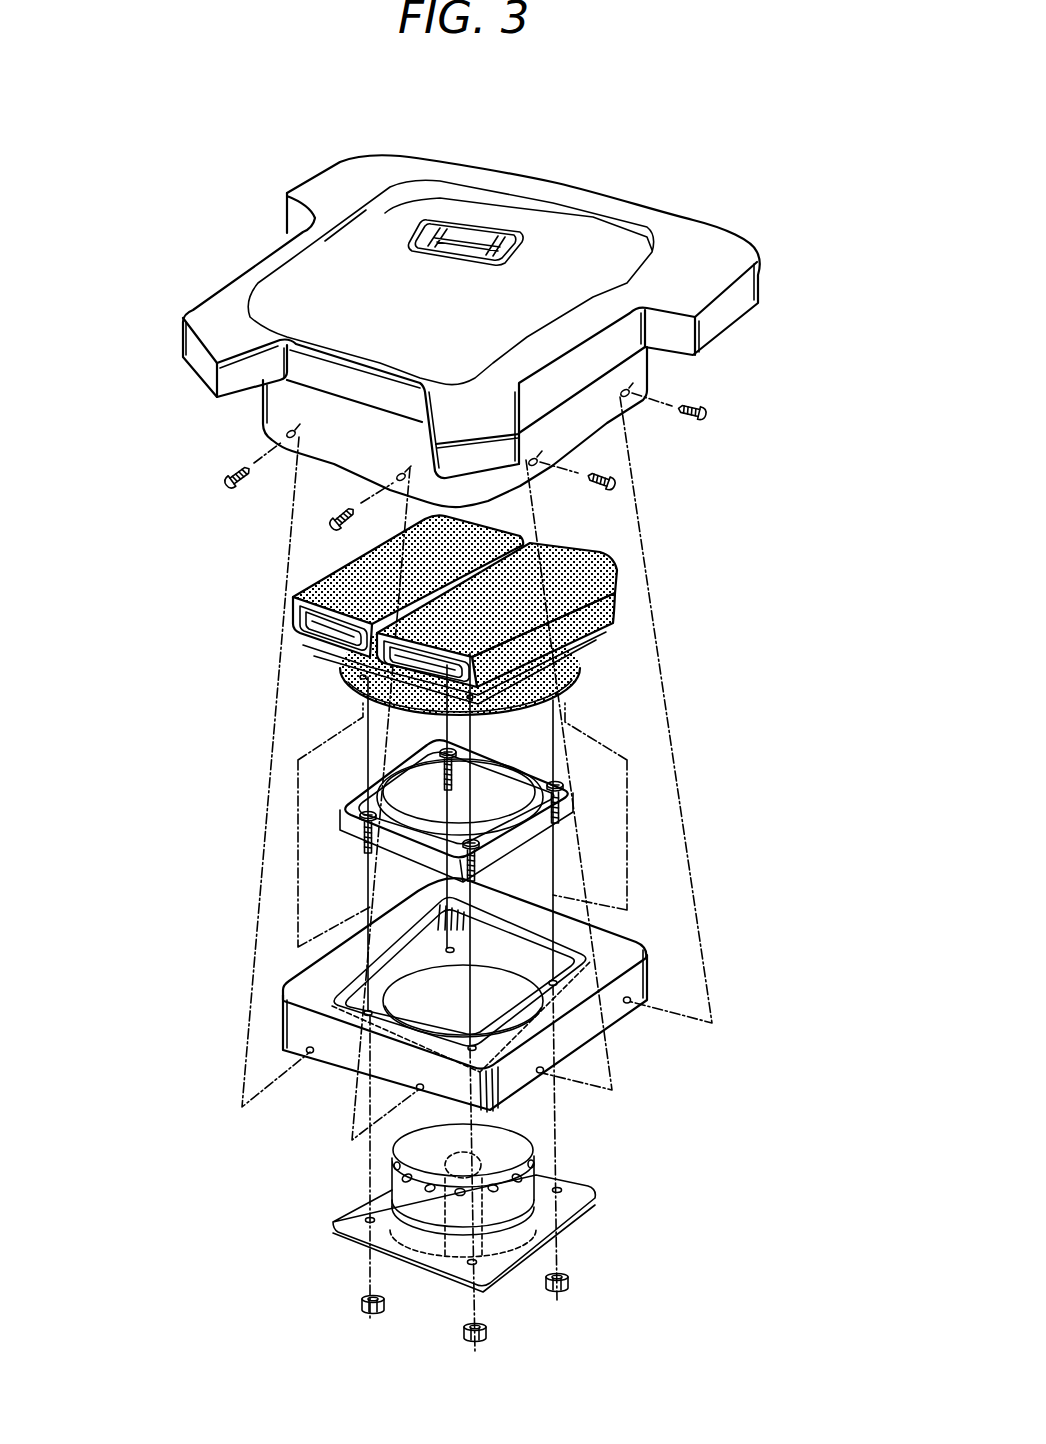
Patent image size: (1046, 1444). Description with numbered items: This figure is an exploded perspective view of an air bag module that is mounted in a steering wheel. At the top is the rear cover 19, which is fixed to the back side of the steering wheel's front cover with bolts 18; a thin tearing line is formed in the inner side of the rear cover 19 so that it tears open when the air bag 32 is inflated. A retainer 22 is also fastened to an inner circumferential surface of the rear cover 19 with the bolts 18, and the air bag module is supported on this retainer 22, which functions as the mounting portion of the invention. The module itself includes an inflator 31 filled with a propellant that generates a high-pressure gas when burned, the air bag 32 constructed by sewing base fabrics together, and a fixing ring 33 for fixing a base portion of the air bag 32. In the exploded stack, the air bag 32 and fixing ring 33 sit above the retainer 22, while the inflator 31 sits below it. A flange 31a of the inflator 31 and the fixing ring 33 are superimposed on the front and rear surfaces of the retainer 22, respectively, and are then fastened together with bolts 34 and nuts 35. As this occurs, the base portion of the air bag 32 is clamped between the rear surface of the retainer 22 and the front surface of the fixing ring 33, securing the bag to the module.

The rear cover 19 is at (680, 213).
The bolts 18 is at (226, 481).
The air bag 32 is at (606, 581).
The fixing ring 33 is at (403, 853).
The bolts 34 is at (364, 812).
The retainer 22 is at (343, 1068).
The inflator 31 is at (534, 1144).
The flange 31a is at (584, 1189).
The nuts 35 is at (361, 1304).